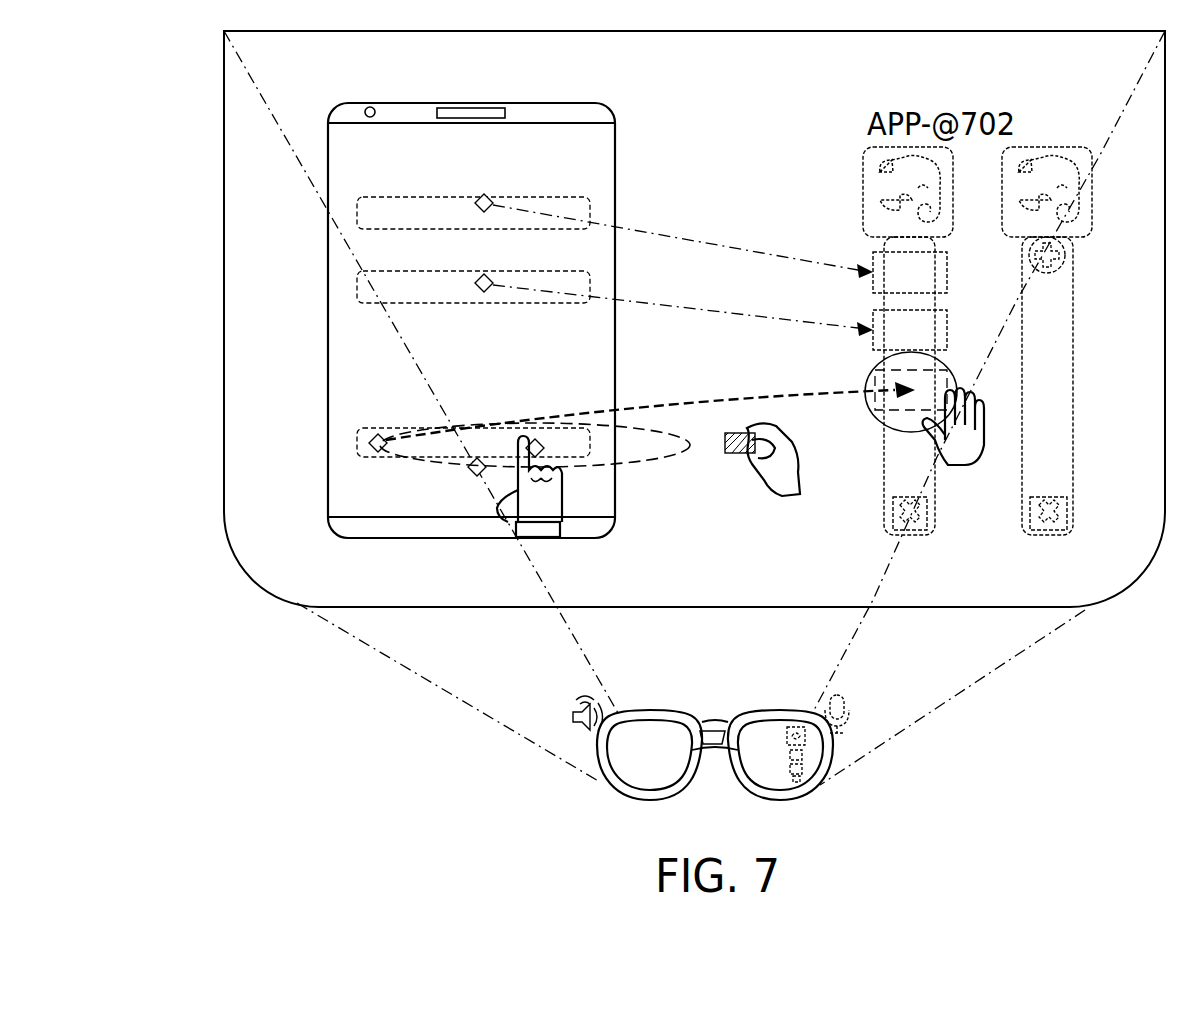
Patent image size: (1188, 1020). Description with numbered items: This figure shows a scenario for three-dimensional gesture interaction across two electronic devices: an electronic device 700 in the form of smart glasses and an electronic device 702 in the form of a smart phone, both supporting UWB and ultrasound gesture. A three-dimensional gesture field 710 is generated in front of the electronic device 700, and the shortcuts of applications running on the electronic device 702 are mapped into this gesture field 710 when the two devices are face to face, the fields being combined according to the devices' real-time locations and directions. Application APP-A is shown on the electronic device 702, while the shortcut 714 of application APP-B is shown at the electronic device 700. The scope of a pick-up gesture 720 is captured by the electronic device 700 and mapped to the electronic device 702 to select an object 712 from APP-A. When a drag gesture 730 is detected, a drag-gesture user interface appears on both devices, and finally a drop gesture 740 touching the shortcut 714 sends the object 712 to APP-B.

The electronic device 700 is at (650, 800).
The electronic device 702 is at (328, 358).
The 3D gesture field 710 is at (224, 311).
The object 712 is at (378, 436).
The shortcut 714 is at (865, 381).
The pick-up gesture 720 is at (553, 540).
The drag gesture 730 is at (787, 496).
The drop gesture 740 is at (966, 466).